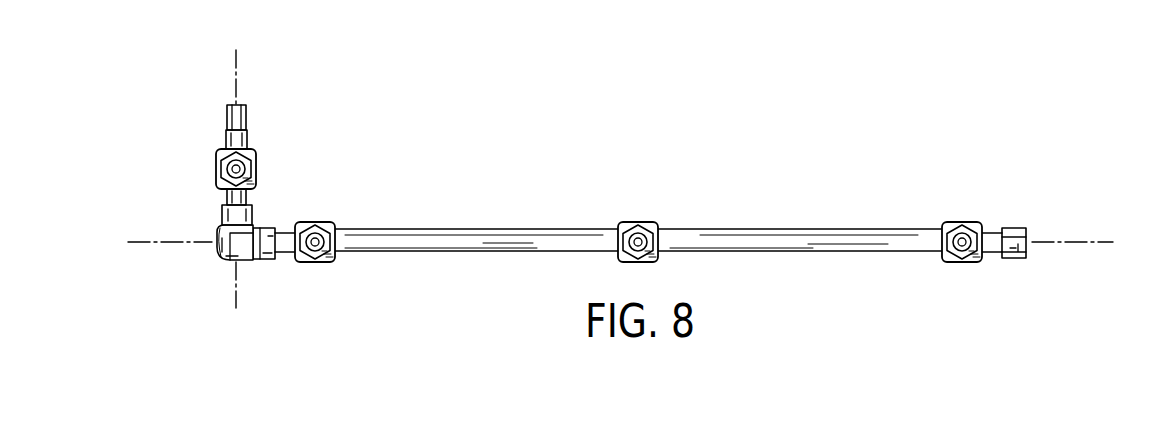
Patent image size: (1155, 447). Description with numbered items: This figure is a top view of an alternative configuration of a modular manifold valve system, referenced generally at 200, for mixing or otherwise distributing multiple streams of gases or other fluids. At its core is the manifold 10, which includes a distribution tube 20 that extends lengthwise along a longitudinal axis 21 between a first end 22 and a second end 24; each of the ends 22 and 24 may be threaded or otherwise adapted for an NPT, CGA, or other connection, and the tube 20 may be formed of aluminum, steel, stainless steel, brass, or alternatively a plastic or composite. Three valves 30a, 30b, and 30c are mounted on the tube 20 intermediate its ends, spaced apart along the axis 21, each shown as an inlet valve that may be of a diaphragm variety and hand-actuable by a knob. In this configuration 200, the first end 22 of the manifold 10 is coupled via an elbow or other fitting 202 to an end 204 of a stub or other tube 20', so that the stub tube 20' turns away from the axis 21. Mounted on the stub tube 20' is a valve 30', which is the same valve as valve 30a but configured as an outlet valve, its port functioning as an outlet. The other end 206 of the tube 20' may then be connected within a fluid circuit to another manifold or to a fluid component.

The modular valve manifold system 200 is at (862, 127).
The modular valve manifold system 10 is at (848, 200).
The distribution tube 20 is at (638, 210).
The longitudinal axis 21 is at (1070, 242).
The first end 22 is at (268, 227).
The second end 24 is at (1015, 232).
The valve 30a is at (340, 208).
The valve 30b is at (658, 205).
The valve 30c is at (958, 207).
The outlet valve 30' is at (275, 160).
The stub tube 20' is at (304, 113).
The elbow fitting 202 is at (222, 257).
The end of stub tube 204 is at (223, 198).
The other end of stub tube 206 is at (248, 112).